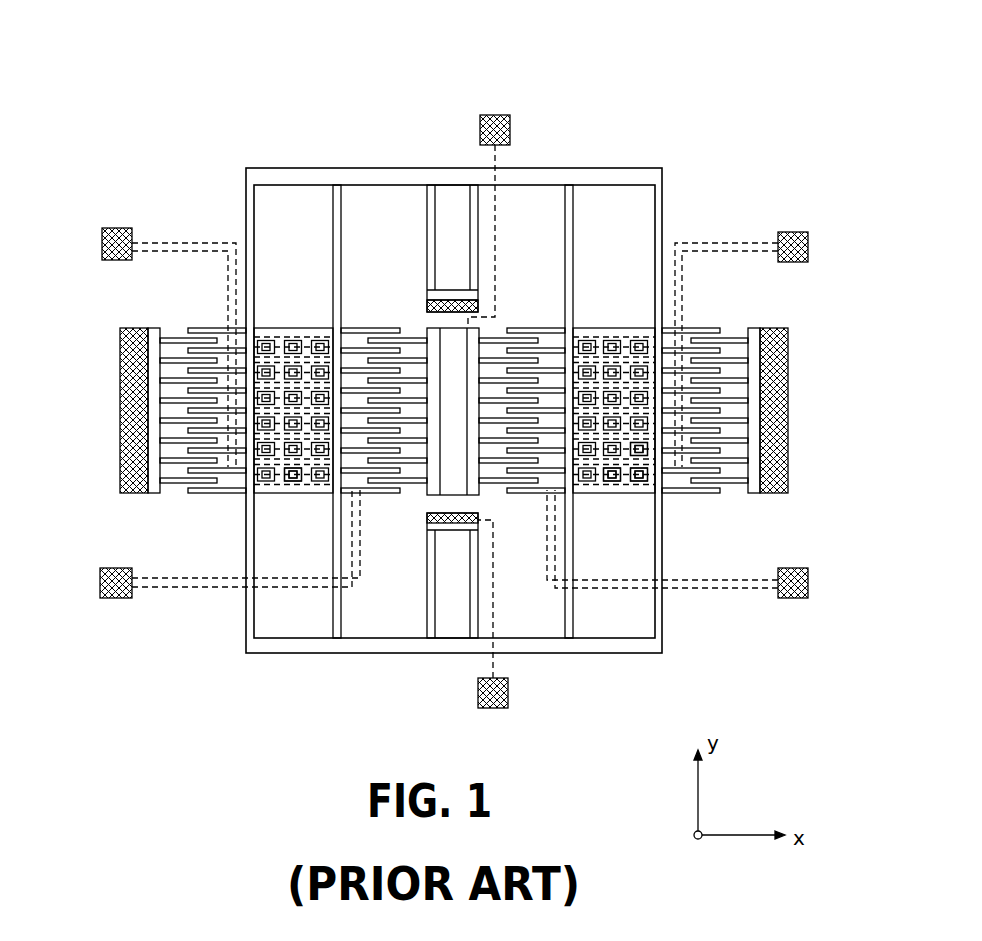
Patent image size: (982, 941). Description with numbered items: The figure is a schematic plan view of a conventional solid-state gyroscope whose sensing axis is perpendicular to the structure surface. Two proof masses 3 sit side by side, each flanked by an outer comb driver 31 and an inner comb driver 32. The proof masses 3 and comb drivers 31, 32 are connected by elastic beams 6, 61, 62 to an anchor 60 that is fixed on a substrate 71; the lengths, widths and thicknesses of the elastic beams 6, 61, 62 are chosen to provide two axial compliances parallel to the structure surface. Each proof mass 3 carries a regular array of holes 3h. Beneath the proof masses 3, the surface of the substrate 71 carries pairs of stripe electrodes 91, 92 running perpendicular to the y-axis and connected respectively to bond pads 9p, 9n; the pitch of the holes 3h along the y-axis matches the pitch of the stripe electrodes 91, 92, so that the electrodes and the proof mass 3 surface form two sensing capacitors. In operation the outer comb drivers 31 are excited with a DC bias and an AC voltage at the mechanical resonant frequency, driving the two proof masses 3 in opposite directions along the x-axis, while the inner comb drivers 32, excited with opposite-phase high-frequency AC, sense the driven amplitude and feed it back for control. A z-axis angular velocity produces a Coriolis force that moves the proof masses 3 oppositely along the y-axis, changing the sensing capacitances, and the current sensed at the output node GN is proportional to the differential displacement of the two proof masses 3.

The elastic beam 61 is at (333, 175).
The elastic beam 6 is at (338, 255).
The elastic beam 62 is at (430, 207).
The anchor 60 is at (427, 518).
The substrate 71 is at (387, 630).
The proof mass 3 is at (295, 335).
The hole 3h is at (290, 482).
The outer comb driver 31 is at (205, 330).
The inner comb driver 32 is at (385, 328).
The stripe electrode 91 is at (645, 458).
The stripe electrode 92 is at (603, 482).
The bond pad 9p is at (459, 337).
The bond pad 9n is at (455, 547).
The output node GN is at (510, 411).